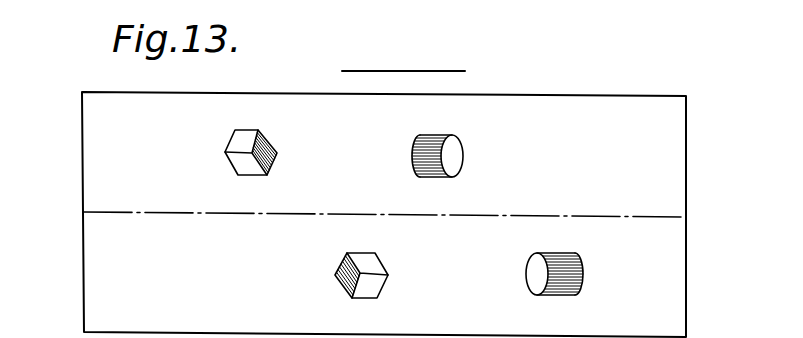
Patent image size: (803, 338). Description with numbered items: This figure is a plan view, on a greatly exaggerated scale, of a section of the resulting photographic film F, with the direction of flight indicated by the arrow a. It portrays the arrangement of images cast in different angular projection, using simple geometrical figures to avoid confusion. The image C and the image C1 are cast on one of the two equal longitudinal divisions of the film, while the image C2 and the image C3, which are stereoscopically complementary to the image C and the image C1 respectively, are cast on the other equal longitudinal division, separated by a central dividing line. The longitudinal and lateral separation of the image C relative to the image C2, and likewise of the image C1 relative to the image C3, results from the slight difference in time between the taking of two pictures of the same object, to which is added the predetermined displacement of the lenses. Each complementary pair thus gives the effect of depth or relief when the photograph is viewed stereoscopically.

The base plate / field F is at (97, 257).
The arrow indicating direction of flight a is at (403, 57).
The image C is at (565, 278).
The image C1 is at (335, 280).
The image C2 is at (457, 164).
The image C3 is at (228, 161).